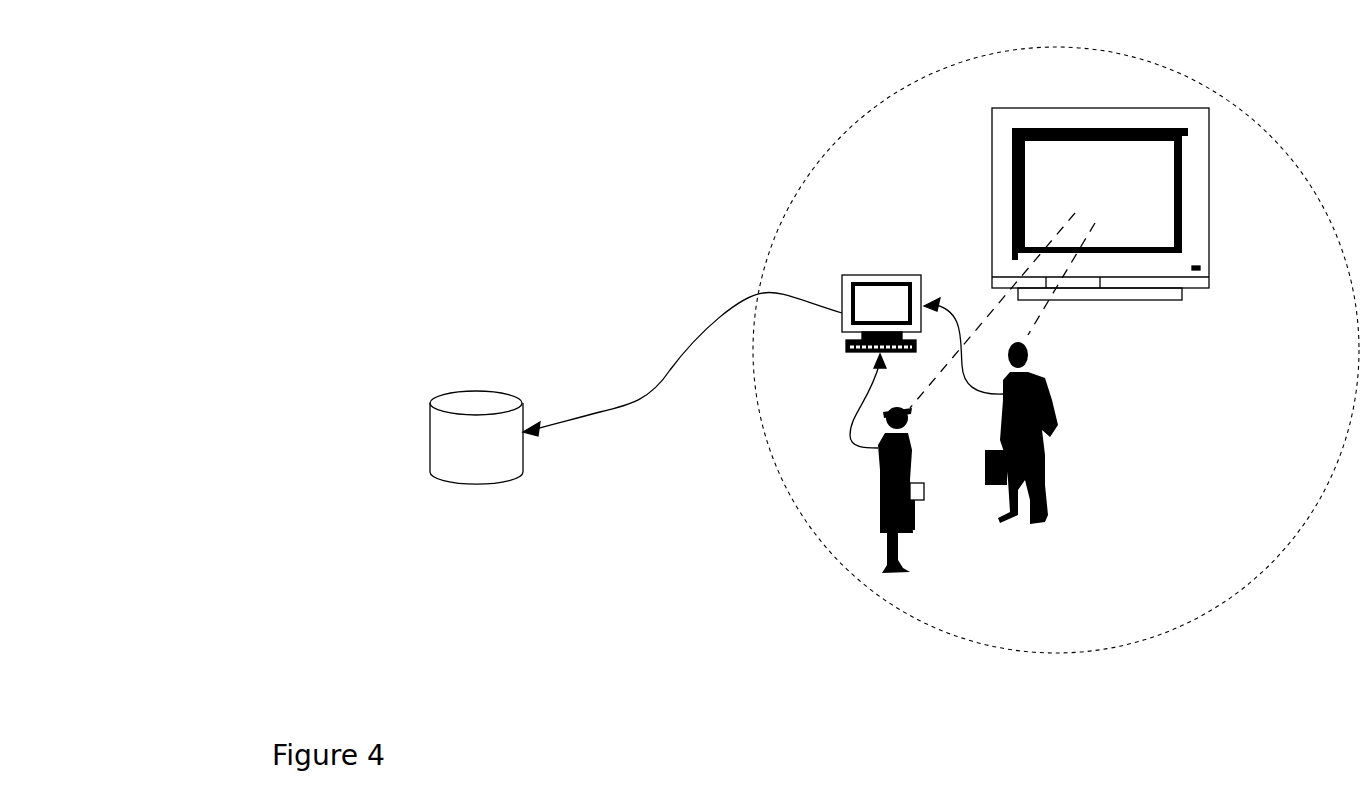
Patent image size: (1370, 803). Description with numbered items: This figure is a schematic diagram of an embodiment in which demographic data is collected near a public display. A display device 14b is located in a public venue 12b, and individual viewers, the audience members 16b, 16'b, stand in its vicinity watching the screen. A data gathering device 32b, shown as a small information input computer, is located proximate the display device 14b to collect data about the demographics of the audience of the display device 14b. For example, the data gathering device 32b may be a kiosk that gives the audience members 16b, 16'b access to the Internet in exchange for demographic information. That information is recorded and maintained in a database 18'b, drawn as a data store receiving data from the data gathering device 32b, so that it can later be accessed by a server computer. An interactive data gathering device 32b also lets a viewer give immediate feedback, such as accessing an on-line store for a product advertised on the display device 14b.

The public venue 12b is at (1223, 406).
The display device 14b is at (1210, 162).
The data gathering device 32b is at (886, 275).
The database 18'b is at (485, 482).
The audience member 16b is at (882, 548).
The audience member 16'b is at (905, 510).